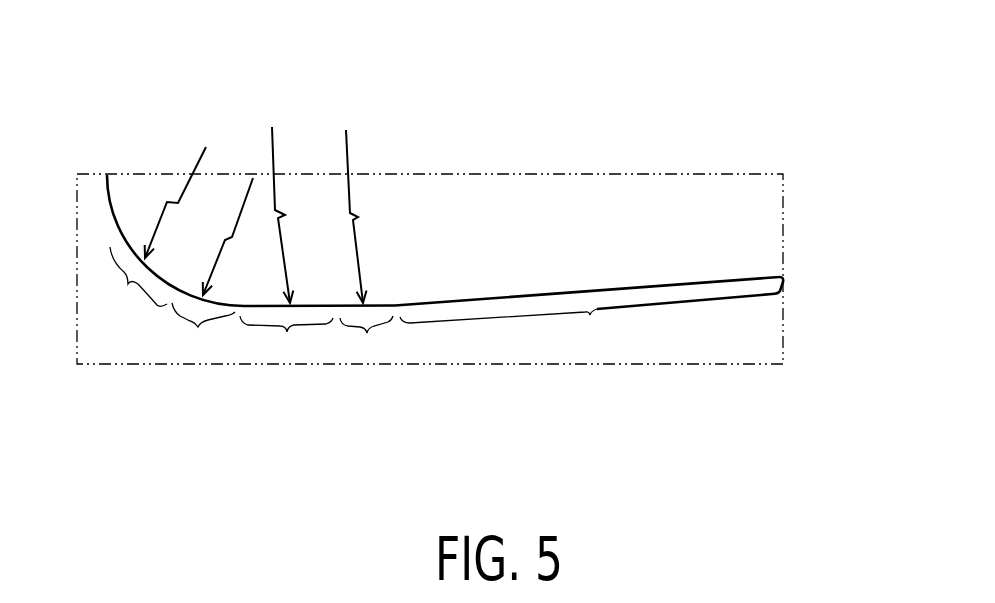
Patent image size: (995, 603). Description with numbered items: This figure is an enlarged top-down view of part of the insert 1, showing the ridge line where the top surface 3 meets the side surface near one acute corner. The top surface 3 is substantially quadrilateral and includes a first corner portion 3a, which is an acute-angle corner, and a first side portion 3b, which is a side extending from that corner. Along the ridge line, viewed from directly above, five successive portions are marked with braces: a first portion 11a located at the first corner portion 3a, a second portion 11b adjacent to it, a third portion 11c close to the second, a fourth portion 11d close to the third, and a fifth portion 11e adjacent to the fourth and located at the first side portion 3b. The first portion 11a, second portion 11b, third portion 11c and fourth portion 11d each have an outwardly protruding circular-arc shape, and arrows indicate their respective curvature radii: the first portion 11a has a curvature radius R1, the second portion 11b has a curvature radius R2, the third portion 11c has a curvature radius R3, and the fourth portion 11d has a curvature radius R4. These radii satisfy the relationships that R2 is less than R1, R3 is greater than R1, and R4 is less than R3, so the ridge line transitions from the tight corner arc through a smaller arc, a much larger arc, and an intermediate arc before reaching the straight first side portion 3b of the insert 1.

The insert 1 is at (573, 147).
The top surface 3 is at (445, 280).
The first corner portion 3a is at (150, 272).
The first side portion 3b is at (655, 288).
The first portion 11a is at (129, 285).
The second portion 11b is at (198, 328).
The third portion 11c is at (287, 333).
The fourth portion 11d is at (367, 334).
The fifth portion 11e is at (590, 315).
The curvature radius R1 is at (194, 178).
The curvature radius R2 is at (236, 210).
The curvature radius R3 is at (273, 158).
The curvature radius R4 is at (347, 162).